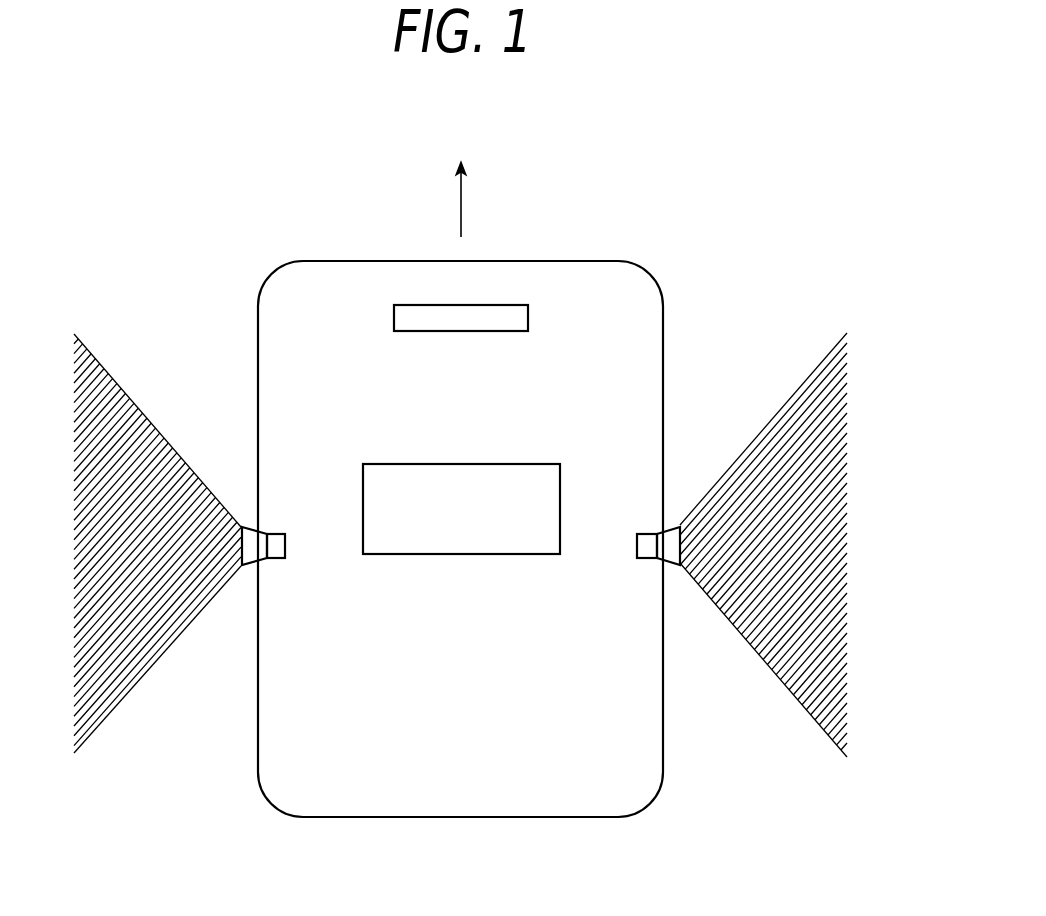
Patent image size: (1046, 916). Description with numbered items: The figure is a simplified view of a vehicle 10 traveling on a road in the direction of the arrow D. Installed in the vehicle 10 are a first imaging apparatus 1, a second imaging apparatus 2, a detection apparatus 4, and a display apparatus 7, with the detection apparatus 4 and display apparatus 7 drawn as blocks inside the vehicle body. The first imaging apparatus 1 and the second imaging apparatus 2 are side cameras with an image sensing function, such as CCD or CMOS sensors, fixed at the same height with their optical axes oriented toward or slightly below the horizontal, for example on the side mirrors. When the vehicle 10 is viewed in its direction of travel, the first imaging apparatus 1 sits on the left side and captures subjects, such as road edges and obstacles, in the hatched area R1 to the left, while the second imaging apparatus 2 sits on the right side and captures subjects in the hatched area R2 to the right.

The vehicle 10 is at (542, 261).
The first imaging apparatus 1 is at (276, 549).
The second imaging apparatus 2 is at (647, 546).
The detection apparatus 4 is at (465, 555).
The display apparatus 7 is at (462, 331).
The direction of travel D is at (461, 187).
The area to the left of the vehicle R1 is at (147, 468).
The area to the right of the vehicle R2 is at (772, 478).